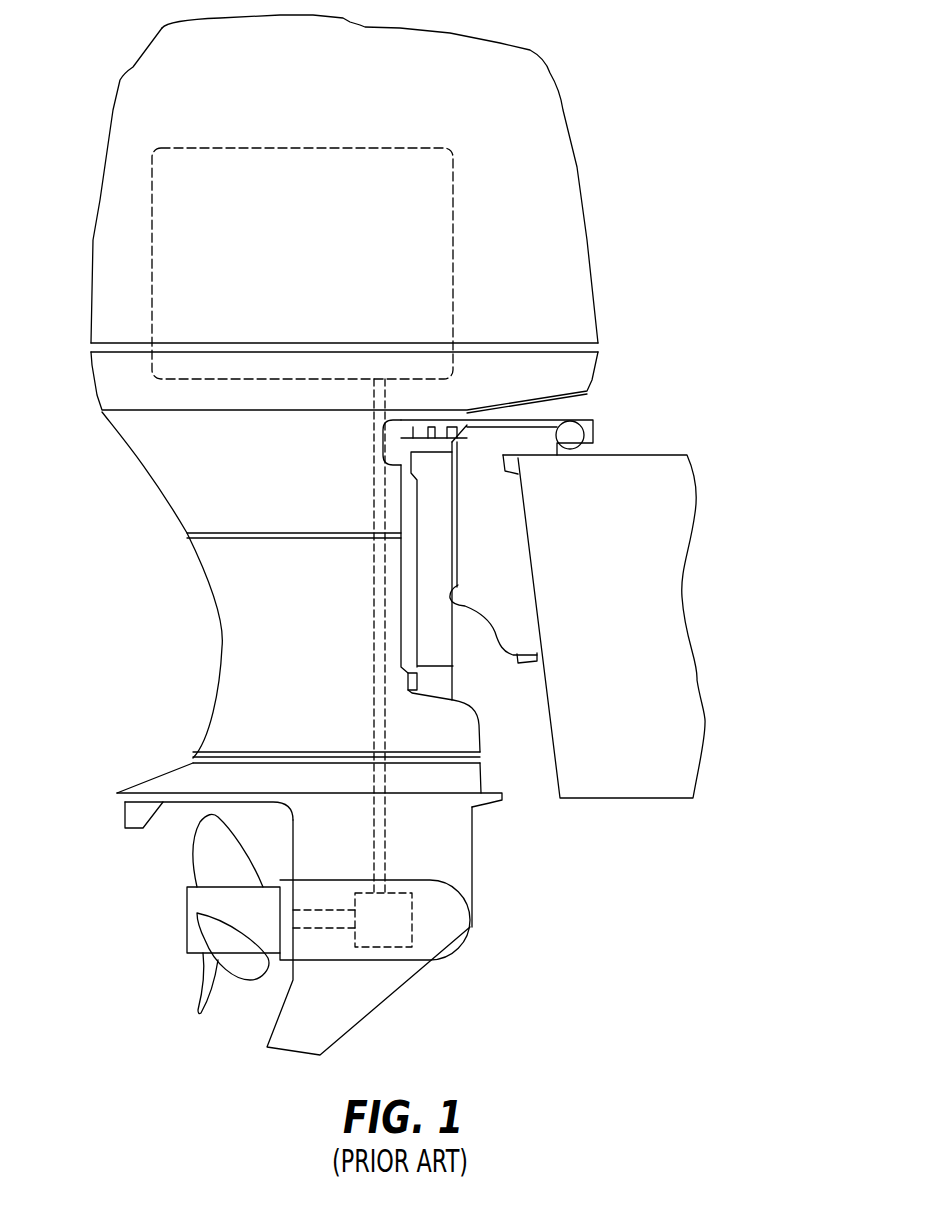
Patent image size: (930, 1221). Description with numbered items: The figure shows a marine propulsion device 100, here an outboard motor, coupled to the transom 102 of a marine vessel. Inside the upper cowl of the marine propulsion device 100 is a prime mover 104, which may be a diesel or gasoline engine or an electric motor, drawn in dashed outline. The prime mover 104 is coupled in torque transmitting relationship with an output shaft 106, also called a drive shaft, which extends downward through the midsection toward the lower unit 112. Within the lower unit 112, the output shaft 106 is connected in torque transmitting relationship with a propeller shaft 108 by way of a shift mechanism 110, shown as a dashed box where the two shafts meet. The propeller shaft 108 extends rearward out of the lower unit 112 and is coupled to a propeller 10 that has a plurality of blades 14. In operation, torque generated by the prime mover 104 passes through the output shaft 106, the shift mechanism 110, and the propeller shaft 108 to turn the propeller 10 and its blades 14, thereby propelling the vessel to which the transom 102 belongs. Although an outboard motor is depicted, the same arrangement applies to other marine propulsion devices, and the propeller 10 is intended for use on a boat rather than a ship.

The marine propulsion device 100 is at (532, 50).
The transom 102 is at (619, 808).
The prime mover 104 is at (152, 217).
The output shaft 106 is at (372, 582).
The propeller shaft 108 is at (323, 928).
The shift mechanism 110 is at (412, 912).
The lower unit 112 is at (475, 835).
The propeller 10 is at (191, 943).
The blades 14 is at (200, 847).